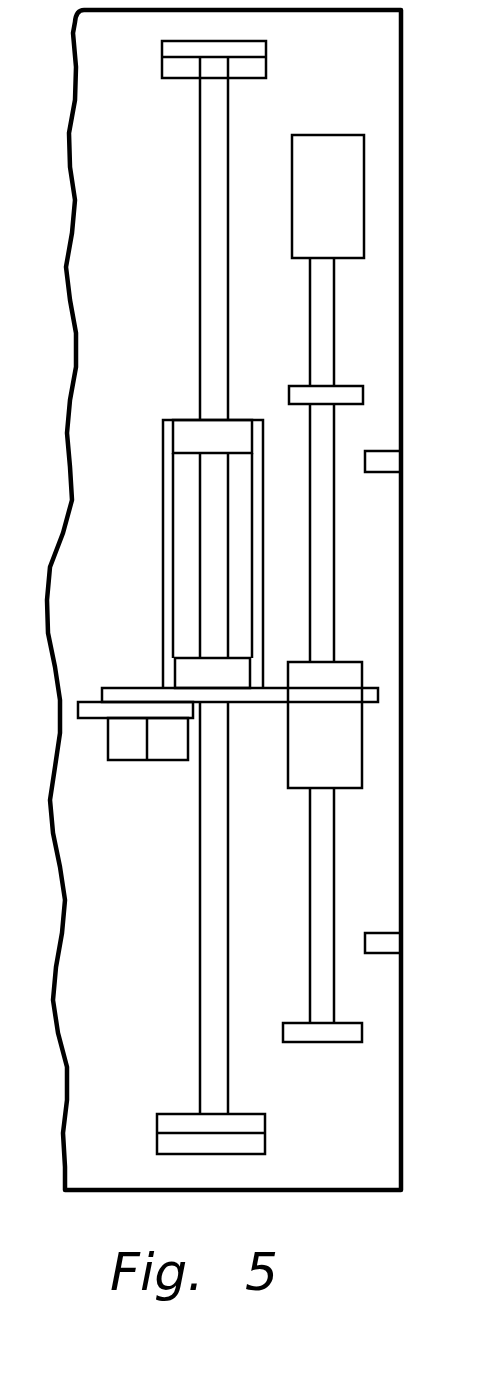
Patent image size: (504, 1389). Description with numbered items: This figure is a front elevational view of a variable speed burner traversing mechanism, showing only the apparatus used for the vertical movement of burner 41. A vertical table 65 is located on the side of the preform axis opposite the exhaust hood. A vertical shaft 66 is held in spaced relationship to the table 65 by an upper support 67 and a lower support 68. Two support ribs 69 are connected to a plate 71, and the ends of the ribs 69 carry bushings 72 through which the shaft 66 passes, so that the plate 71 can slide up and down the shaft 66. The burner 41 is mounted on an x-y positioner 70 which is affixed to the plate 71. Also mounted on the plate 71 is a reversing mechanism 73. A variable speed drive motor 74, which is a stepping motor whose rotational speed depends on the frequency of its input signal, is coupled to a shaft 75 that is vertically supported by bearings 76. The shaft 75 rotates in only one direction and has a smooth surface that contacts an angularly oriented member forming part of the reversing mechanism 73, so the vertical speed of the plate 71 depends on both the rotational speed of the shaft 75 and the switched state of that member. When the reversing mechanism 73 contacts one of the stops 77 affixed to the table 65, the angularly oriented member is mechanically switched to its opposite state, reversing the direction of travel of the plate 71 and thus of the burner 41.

The burner 41 is at (168, 745).
The vertical table 65 is at (78, 932).
The vertical shaft 66 is at (212, 193).
The support 67 is at (255, 51).
The support 68 is at (255, 1143).
The support ribs 69 is at (257, 490).
The x-y positioner 70 is at (93, 713).
The plate 71 is at (122, 694).
The bushings 72 is at (188, 430).
The reversing mechanism 73 is at (303, 757).
The variable speed drive motor 74 is at (324, 146).
The shaft 75 is at (322, 311).
The bearings 76 is at (301, 393).
The stops 77 is at (382, 460).